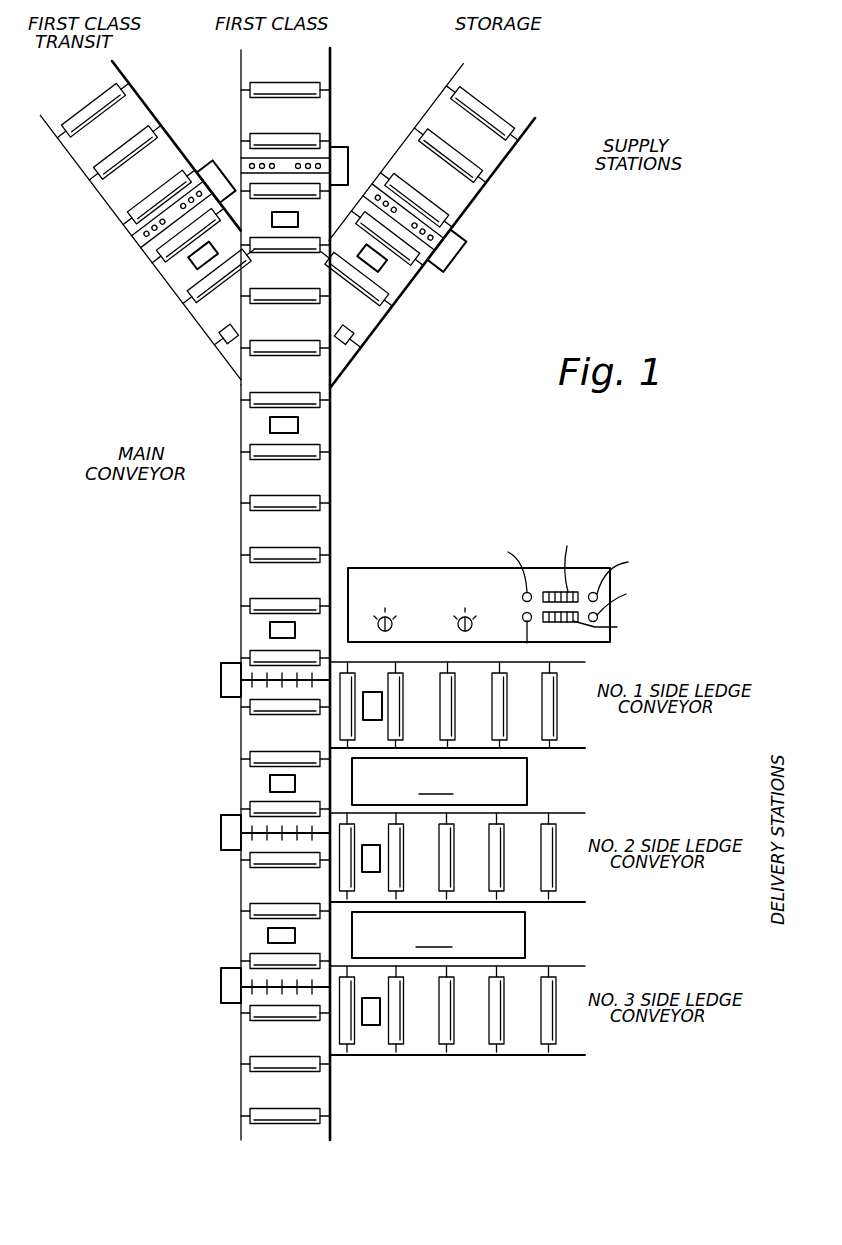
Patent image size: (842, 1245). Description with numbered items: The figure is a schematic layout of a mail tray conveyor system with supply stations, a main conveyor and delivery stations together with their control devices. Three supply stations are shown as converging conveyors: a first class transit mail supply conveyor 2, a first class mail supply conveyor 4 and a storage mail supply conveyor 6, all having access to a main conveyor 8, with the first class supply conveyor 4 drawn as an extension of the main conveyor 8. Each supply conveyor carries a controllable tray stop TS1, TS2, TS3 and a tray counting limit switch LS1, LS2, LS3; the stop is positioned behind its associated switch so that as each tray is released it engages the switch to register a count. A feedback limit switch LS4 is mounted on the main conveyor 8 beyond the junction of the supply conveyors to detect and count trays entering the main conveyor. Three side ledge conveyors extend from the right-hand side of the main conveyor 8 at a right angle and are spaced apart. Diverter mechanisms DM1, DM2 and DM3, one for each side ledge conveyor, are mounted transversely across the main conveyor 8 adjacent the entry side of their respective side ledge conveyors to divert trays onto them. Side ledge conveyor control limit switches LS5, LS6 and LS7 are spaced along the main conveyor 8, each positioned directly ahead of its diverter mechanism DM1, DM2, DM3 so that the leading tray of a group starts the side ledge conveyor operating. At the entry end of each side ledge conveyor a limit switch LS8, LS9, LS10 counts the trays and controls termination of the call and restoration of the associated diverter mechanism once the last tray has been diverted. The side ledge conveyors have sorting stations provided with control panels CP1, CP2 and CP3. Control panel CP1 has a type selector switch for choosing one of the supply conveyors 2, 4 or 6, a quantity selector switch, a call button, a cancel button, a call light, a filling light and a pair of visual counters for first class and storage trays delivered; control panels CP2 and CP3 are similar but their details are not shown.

The first class transit mail supply conveyor 2 is at (103, 198).
The first class mail supply conveyor 4 is at (240, 99).
The storage mail supply conveyor 6 is at (418, 107).
The main conveyor 8 is at (335, 478).
The tray stop TS1 is at (137, 242).
The tray stop TS2 is at (346, 158).
The tray stop TS3 is at (453, 244).
The tray counting limit switch LS1 is at (190, 264).
The tray counting limit switch LS2 is at (285, 228).
The tray counting limit switch LS3 is at (381, 268).
The feedback limit switch LS4 is at (298, 425).
The side ledge conveyor control limit switch LS5 is at (270, 630).
The side ledge conveyor control limit switch LS6 is at (270, 784).
The side ledge conveyor control limit switch LS7 is at (268, 936).
The limit switch LS8 is at (382, 707).
The limit switch LS9 is at (380, 858).
The limit switch LS10 is at (380, 1012).
The diverter mechanism DM1 is at (221, 684).
The diverter mechanism DM2 is at (221, 833).
The diverter mechanism DM3 is at (221, 988).
The control panel CP1 is at (398, 566).
The control panel CP2 is at (439, 781).
The control panel CP3 is at (438, 935).